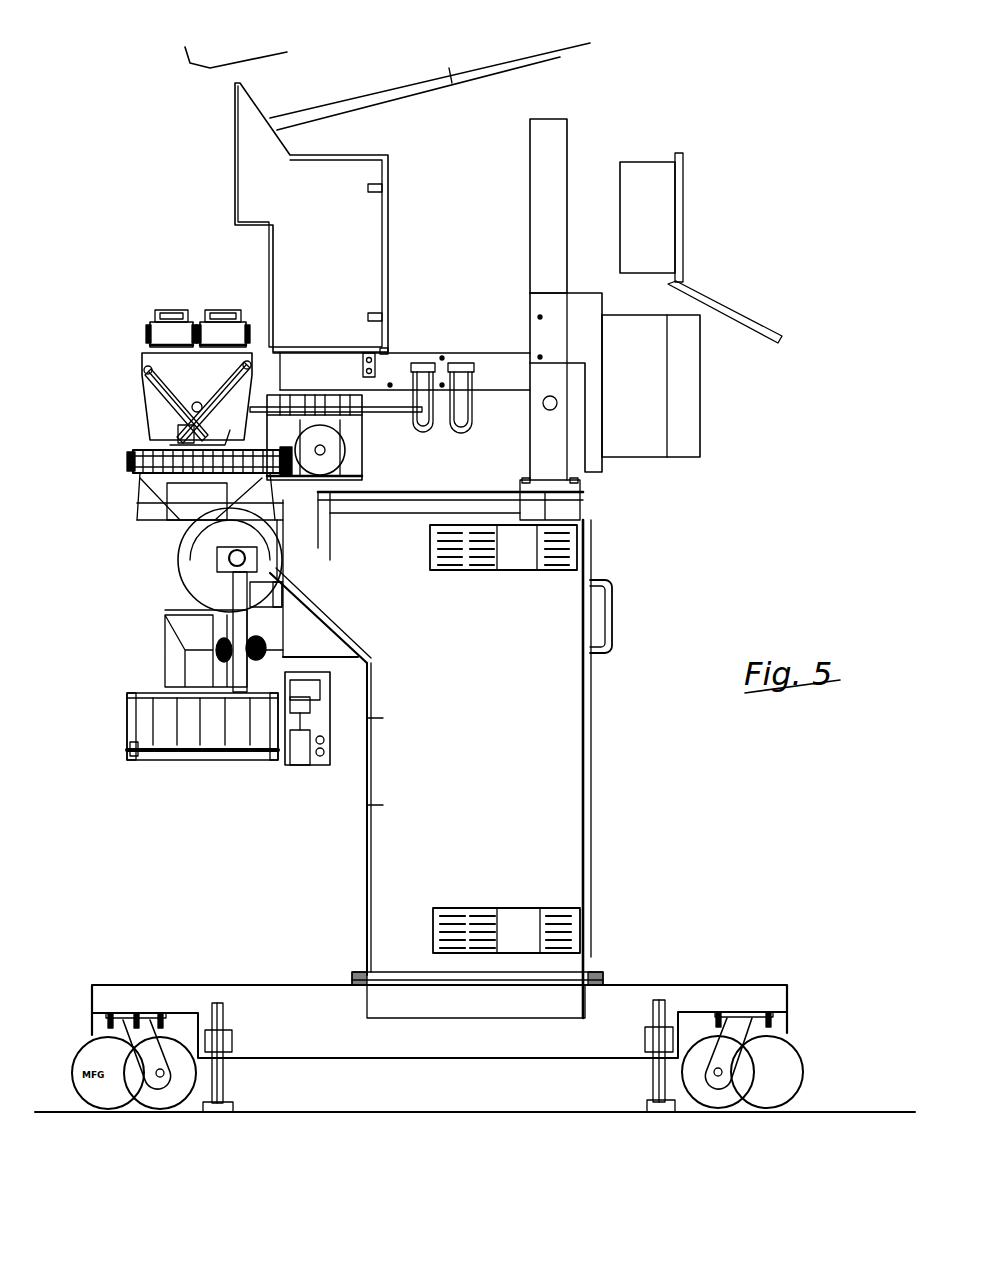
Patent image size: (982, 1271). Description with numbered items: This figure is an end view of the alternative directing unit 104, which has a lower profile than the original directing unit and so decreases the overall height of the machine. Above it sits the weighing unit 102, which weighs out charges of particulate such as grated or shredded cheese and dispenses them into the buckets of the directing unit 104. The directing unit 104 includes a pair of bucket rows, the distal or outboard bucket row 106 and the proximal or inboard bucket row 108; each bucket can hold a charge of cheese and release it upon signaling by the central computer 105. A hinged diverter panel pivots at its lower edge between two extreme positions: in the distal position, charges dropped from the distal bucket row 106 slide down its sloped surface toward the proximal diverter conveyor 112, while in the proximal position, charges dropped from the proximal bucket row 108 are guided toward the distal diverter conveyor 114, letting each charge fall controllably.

The weighing unit 102 is at (118, 60).
The directing unit 104 is at (120, 597).
The central computer 105 is at (590, 563).
The distal bucket row 106 is at (170, 310).
The proximal bucket row 108 is at (223, 310).
The proximal diverter conveyor 112 is at (187, 503).
The distal diverter conveyor 114 is at (163, 503).